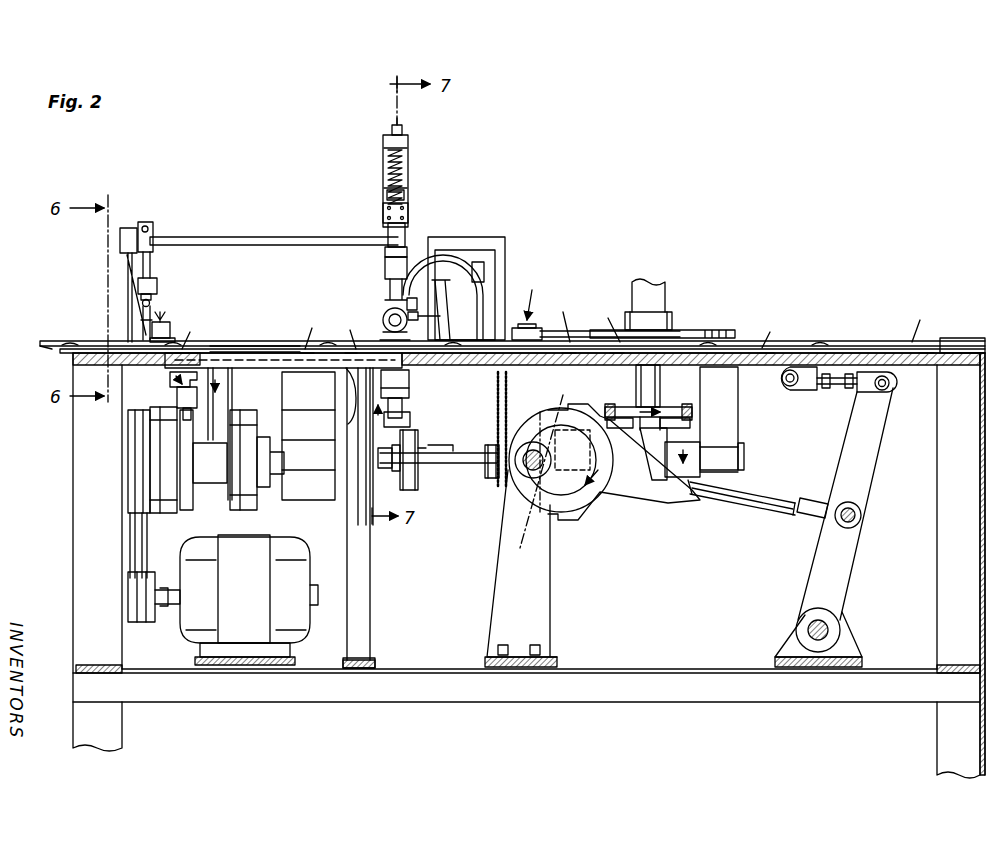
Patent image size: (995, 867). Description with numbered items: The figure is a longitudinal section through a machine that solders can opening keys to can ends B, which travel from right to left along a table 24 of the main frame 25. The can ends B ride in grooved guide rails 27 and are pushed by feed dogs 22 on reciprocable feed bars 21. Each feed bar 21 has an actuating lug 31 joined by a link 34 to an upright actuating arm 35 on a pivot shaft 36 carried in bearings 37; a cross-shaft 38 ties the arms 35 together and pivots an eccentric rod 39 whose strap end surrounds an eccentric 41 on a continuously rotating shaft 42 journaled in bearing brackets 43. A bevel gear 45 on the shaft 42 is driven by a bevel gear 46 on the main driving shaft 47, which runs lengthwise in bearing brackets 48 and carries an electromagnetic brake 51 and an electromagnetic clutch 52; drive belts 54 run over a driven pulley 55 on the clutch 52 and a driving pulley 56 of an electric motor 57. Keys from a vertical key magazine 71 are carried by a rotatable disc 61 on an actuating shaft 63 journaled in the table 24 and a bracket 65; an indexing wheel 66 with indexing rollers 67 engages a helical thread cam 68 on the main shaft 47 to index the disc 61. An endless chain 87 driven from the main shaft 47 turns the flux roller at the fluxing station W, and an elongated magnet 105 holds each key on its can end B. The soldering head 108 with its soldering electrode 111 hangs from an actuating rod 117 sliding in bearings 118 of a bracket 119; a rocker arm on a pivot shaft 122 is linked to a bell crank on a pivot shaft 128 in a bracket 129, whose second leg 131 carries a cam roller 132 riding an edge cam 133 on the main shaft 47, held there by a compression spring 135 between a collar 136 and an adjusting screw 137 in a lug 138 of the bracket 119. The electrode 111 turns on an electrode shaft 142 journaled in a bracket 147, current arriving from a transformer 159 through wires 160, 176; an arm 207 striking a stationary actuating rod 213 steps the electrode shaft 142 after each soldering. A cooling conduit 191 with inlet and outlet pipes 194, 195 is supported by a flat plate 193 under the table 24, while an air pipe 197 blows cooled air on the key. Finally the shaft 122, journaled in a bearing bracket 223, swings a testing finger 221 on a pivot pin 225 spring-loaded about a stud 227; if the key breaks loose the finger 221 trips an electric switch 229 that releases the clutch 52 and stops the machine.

The feed bars 21 is at (905, 340).
The feed dogs 22 is at (72, 341).
The table 24 is at (932, 362).
The frame 25 is at (950, 446).
The guide rails 27 is at (48, 353).
The actuating lug 31 is at (785, 372).
The links 34 is at (835, 386).
The actuating arms 35 is at (860, 432).
The pivot shaft 36 is at (826, 627).
The bearings 37 is at (842, 648).
The cross-shaft 38 is at (861, 515).
The eccentric rod 39 is at (740, 498).
The eccentric 41 is at (572, 493).
The eccentric shaft 42 is at (533, 452).
The bearing brackets 43 is at (540, 598).
The bevel gear 45 is at (524, 478).
The bevel gear 46 is at (549, 462).
The main driving shaft 47 is at (475, 458).
The bearing brackets 48 is at (758, 432).
The electromagnetic brake 51 is at (257, 505).
The electromagnetic clutch 52 is at (160, 513).
The drive belts 54 is at (138, 535).
The driven pulley 55 is at (140, 442).
The driving pulley 56 is at (135, 597).
The electric motor 57 is at (258, 612).
The rotatable disc 61 is at (722, 330).
The actuating shaft 63 is at (650, 316).
The bracket 65 is at (660, 382).
The indexing wheel 66 is at (682, 408).
The indexing rollers 67 is at (690, 424).
The helical thread cam 68 is at (700, 455).
The key magazine 71 is at (655, 290).
The endless chain 87 is at (498, 400).
The magnet 105 is at (588, 331).
The soldering head 108 is at (388, 250).
The soldering electrode 111 is at (385, 272).
The actuating rod 117 is at (404, 195).
The bearings 118 is at (383, 213).
The bracket 119 is at (404, 160).
The pivot shaft 122 is at (252, 237).
The pivot shaft 128 is at (410, 418).
The bracket 129 is at (409, 378).
The second leg 131 is at (390, 468).
The cam roller 132 is at (462, 458).
The edge cam 133 is at (418, 440).
The compression spring 135 is at (384, 155).
The collar 136 is at (384, 190).
The adjusting screw 137 is at (402, 128).
The lug 138 is at (408, 143).
The electrode shaft 142 is at (385, 314).
The bracket 147 is at (486, 271).
The transformer 159 is at (478, 240).
The wire 160 is at (438, 262).
The wire 176 is at (420, 320).
The cooling conduit 191 is at (300, 368).
The flat plate 193 is at (348, 400).
The inlet pipe 194 is at (402, 398).
The outlet pipe 195 is at (195, 400).
The air pipe 197 is at (262, 340).
The arm 207 is at (412, 310).
The actuating rod 213 is at (452, 308).
The finger 221 is at (143, 318).
The bearing bracket 223 is at (128, 268).
The pivot pin 225 is at (157, 282).
The stud 227 is at (150, 301).
The electric switch 229 is at (182, 306).
The can ends B is at (554, 322).
The fluxing station W is at (527, 306).